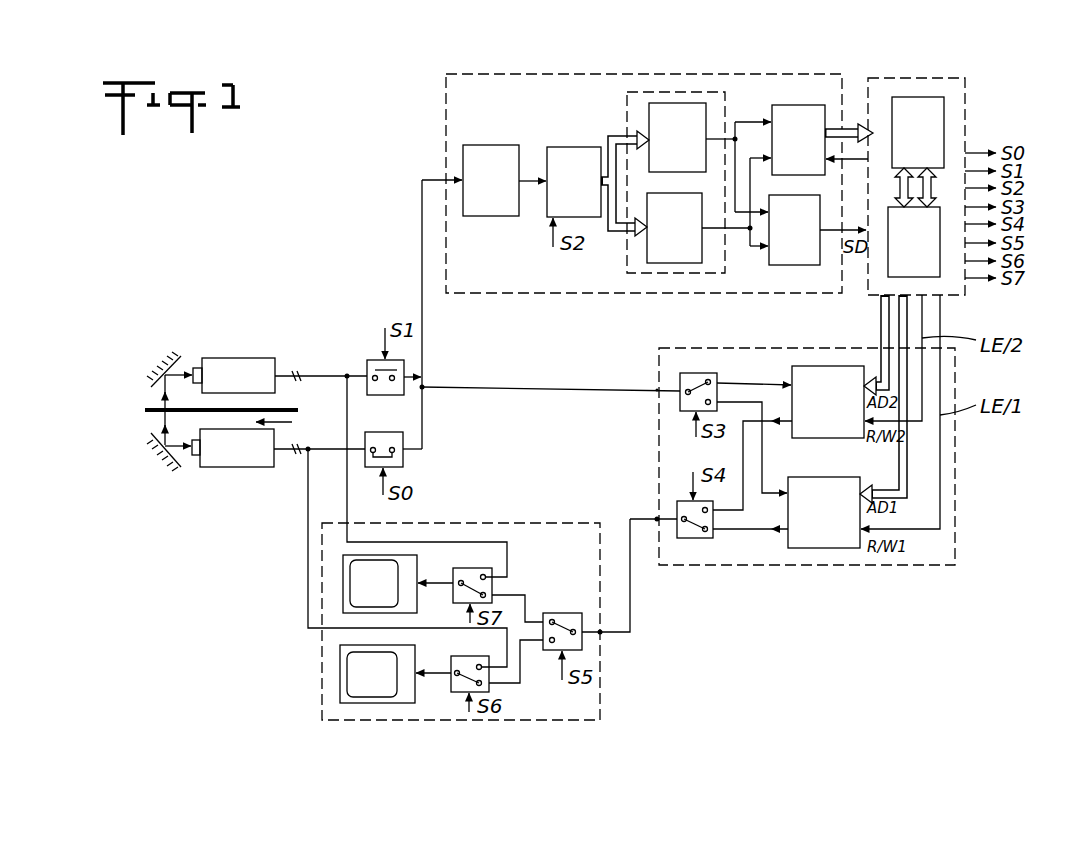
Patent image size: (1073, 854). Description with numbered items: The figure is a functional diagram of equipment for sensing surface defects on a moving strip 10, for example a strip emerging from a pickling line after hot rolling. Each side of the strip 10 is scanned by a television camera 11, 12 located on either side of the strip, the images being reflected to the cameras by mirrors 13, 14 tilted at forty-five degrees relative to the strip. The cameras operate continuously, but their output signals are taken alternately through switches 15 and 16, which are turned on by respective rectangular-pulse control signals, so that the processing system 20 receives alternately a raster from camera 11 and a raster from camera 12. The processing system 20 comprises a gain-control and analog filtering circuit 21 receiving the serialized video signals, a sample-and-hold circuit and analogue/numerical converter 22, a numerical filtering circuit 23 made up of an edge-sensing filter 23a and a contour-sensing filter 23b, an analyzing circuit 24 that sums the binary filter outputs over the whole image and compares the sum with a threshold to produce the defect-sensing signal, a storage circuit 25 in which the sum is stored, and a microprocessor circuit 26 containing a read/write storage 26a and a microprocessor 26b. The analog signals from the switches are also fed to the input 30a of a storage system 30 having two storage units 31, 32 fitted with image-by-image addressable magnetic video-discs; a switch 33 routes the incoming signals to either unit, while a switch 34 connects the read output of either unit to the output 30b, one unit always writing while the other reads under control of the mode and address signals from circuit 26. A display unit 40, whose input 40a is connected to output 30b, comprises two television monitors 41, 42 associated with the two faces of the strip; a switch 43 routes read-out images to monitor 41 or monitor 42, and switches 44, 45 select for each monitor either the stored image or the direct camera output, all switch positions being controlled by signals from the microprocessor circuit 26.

The strip 10 is at (297, 411).
The television camera 11 is at (233, 448).
The television camera 12 is at (234, 375).
The mirror 13 is at (164, 462).
The mirror 14 is at (158, 380).
The switch 15 is at (403, 462).
The switch 16 is at (404, 372).
The processing system 20 is at (586, 294).
The gain-control and analog filtering circuit 21 is at (491, 180).
The sample-and-hold circuit and analogue/numerical converter 22 is at (574, 182).
The numerical filtering circuit 23 is at (628, 112).
The edge-sensing filter 23a is at (677, 137).
The contour-sensing filter 23b is at (674, 228).
The analyzing circuit 24 is at (794, 230).
The storage circuit 25 is at (798, 140).
The microprocessor circuit 26 is at (960, 292).
The read/write storage 26a is at (918, 132).
The microprocessor 26b is at (914, 242).
The storage system 30 is at (954, 501).
The input 30a is at (656, 387).
The output 30b is at (656, 518).
The storage unit 31 is at (824, 512).
The storage unit 32 is at (828, 402).
The switch 33 is at (705, 366).
The switch 34 is at (692, 538).
The display unit 40 is at (322, 673).
The input 40a is at (602, 635).
The television monitor 41 is at (400, 700).
The television monitor 42 is at (415, 571).
The switch 43 is at (563, 618).
The switch 44 is at (468, 662).
The switch 45 is at (472, 572).